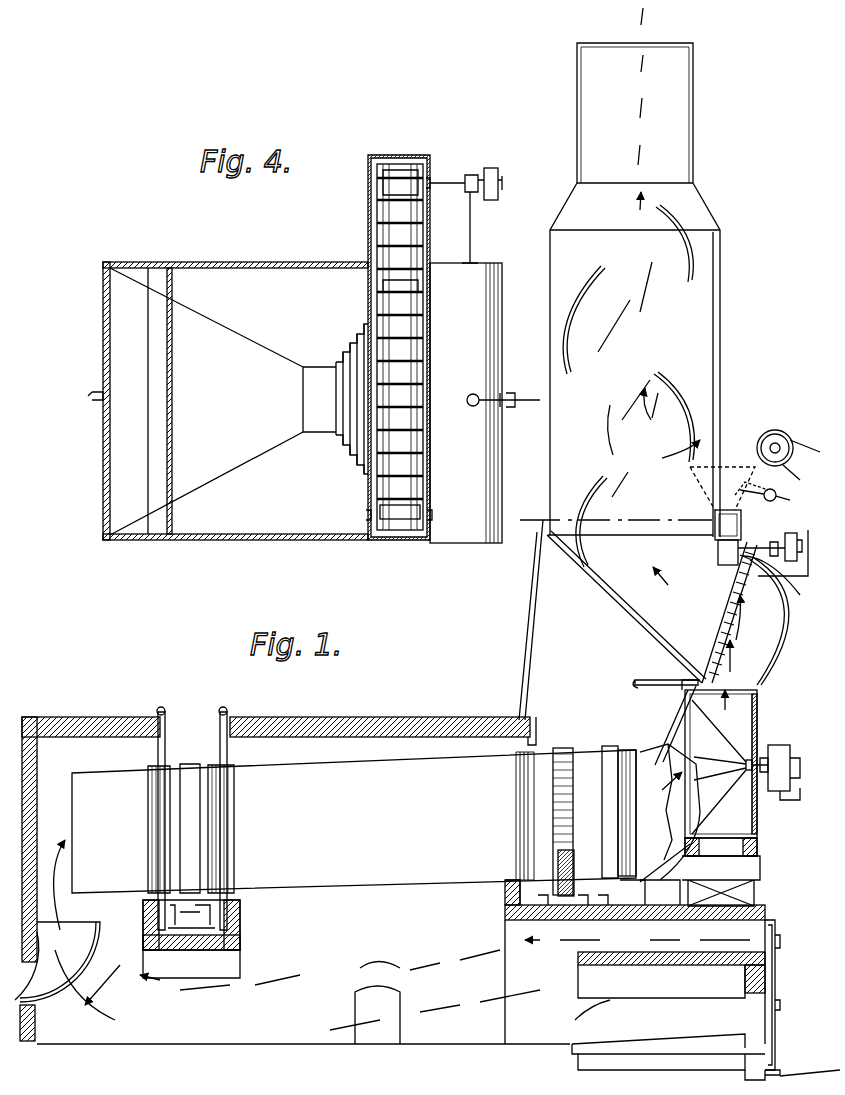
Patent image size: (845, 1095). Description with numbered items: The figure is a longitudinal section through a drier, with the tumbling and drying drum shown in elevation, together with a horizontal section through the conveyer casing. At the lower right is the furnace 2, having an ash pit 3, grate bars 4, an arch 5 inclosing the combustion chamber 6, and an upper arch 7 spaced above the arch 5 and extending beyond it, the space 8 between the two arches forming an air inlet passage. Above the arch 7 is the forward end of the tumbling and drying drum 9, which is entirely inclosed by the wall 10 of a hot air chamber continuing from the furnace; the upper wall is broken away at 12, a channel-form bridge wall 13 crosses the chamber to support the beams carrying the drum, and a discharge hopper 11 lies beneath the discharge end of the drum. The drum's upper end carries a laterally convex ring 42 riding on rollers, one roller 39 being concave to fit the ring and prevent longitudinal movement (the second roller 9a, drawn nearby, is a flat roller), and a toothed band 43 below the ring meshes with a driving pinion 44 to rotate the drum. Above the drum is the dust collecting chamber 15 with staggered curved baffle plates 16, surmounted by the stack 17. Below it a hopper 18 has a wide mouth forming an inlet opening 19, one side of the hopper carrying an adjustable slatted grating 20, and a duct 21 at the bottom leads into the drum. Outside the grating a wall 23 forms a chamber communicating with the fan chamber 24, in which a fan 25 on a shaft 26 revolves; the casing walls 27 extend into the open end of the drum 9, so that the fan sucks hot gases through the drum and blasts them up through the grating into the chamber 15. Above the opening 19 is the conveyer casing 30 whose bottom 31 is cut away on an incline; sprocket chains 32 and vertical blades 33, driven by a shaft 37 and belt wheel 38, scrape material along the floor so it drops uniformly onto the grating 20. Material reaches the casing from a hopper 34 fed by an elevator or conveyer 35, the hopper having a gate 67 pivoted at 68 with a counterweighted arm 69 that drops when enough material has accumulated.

In FIG. 1, the furnace 2 is at (635, 982).
In FIG. 1, the ash pit 3 is at (560, 1029).
In FIG. 4, the grate bars 4 is at (431, 378).
In FIG. 1, the grate bars 4 is at (630, 1046).
In FIG. 1, the arch 5 is at (776, 945).
In FIG. 1, the combustion chamber 6 is at (671, 975).
In FIG. 1, the upper arch 7 is at (760, 905).
In FIG. 1, the air inlet passage 8 is at (768, 926).
In FIG. 1, the tumbling and drying drum 9 is at (354, 821).
In FIG. 1, the drum tire 9a is at (190, 770).
In FIG. 1, the wall of hot air chamber 10 is at (312, 730).
In FIG. 1, the discharge hopper 11 is at (292, 983).
In FIG. 1, the break in upper wall 12 is at (196, 735).
In FIG. 1, the bridge wall 13 is at (242, 940).
In FIG. 1, the dust collecting chamber 15 is at (712, 356).
In FIG. 1, the baffle plates 16 is at (685, 412).
In FIG. 1, the stack 17 is at (698, 135).
In FIG. 4, the hopper 18 is at (228, 401).
In FIG. 1, the hopper 18 is at (612, 620).
In FIG. 4, the inlet opening 19 is at (398, 520).
In FIG. 1, the inlet opening 19 is at (718, 552).
In FIG. 4, the grating 20 is at (340, 357).
In FIG. 1, the grating 20 is at (722, 598).
In FIG. 4, the duct 21 is at (319, 399).
In FIG. 1, the duct 21 is at (665, 710).
In FIG. 1, the wall 23 is at (760, 672).
In FIG. 1, the fan chamber 24 is at (758, 730).
In FIG. 1, the fan 25 is at (740, 760).
In FIG. 1, the shaft 26 is at (798, 790).
In FIG. 1, the walls of fan casing 27 is at (645, 744).
In FIG. 4, the conveyer casing 30 is at (431, 328).
In FIG. 1, the conveyer casing 30 is at (742, 525).
In FIG. 4, the bottom 31 is at (408, 236).
In FIG. 4, the sprocket chains 32 is at (418, 285).
In FIG. 4, the vertical blades 33 is at (380, 243).
In FIG. 1, the vertical blades 33 is at (716, 530).
In FIG. 1, the hopper 34 is at (728, 470).
In FIG. 1, the elevator or conveyer 35 is at (790, 440).
In FIG. 4, the shaft 37 is at (460, 170).
In FIG. 4, the belt wheel 38 is at (498, 170).
In FIG. 1, the belt wheel 38 is at (795, 575).
In FIG. 1, the roller 39 is at (402, 935).
In FIG. 1, the ring 42 is at (612, 750).
In FIG. 1, the toothed band or ring 43 is at (562, 750).
In FIG. 1, the driving pinion 44 is at (574, 858).
In FIG. 1, the gate 67 is at (742, 483).
In FIG. 1, the pivot 68 is at (761, 486).
In FIG. 1, the counterweighted arm 69 is at (795, 490).